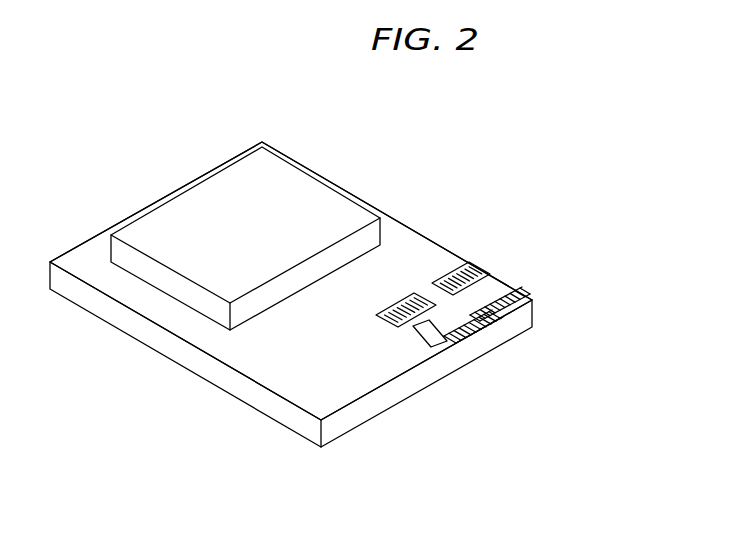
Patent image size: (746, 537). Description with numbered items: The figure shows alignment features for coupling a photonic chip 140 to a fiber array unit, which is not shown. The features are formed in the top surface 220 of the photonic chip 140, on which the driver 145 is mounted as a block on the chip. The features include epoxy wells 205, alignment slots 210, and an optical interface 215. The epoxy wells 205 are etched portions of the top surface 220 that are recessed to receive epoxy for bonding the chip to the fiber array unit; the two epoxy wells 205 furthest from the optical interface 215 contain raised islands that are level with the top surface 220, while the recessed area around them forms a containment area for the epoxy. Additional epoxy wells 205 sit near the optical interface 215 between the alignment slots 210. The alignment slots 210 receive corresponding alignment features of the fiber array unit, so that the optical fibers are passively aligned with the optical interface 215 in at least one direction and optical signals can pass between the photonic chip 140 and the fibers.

The photonic chip 140 is at (280, 410).
The driver 145 is at (195, 207).
The epoxy wells 205 is at (411, 293).
The alignment slots 210 is at (458, 431).
The optical interface 215 is at (486, 327).
The top surface 220 is at (405, 250).